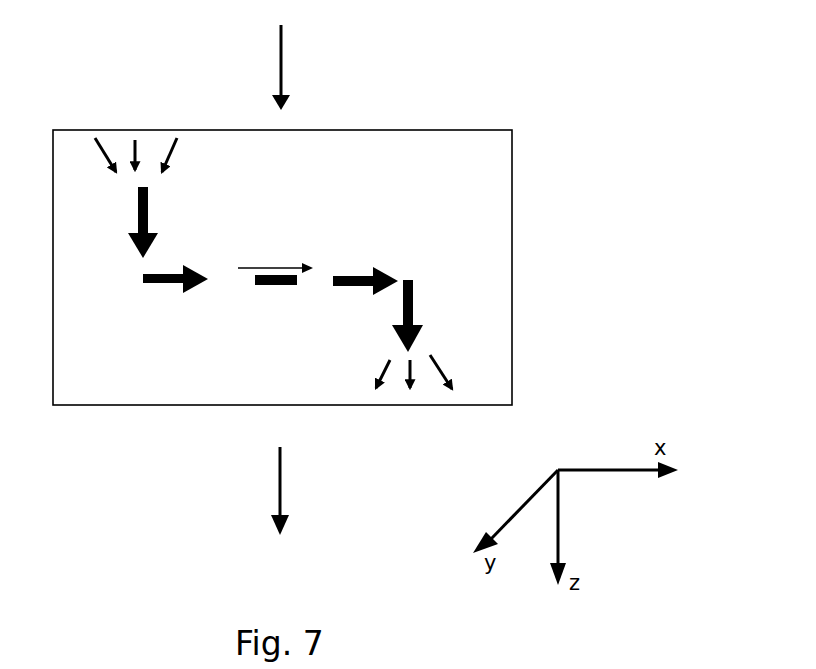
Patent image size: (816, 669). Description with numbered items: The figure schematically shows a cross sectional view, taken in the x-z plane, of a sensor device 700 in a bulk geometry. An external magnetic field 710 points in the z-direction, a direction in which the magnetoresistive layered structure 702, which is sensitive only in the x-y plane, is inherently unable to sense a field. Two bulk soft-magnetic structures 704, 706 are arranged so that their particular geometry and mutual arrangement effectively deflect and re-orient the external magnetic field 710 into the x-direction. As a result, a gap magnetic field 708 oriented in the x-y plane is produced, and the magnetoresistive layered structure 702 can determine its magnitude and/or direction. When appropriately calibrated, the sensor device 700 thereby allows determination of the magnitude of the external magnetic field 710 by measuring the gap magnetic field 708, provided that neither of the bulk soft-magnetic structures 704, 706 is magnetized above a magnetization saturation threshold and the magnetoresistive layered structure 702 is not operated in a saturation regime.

The sensor device 700 is at (512, 200).
The magnetoresistive layered structure 702 is at (275, 286).
The bulk soft-magnetic structure 704 is at (170, 203).
The bulk soft-magnetic structure 706 is at (430, 287).
The gap magnetic field 708 is at (265, 265).
The external magnetic field 710 is at (282, 60).